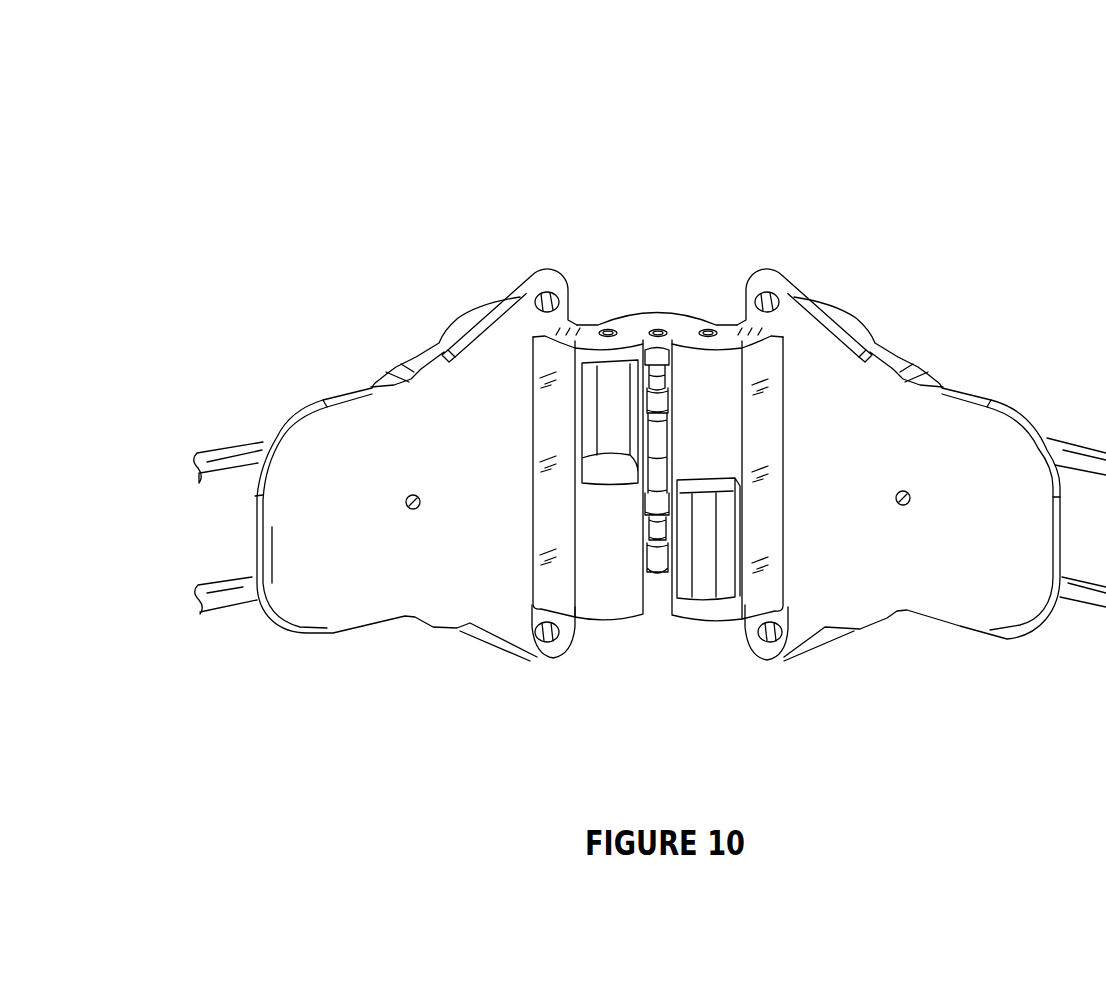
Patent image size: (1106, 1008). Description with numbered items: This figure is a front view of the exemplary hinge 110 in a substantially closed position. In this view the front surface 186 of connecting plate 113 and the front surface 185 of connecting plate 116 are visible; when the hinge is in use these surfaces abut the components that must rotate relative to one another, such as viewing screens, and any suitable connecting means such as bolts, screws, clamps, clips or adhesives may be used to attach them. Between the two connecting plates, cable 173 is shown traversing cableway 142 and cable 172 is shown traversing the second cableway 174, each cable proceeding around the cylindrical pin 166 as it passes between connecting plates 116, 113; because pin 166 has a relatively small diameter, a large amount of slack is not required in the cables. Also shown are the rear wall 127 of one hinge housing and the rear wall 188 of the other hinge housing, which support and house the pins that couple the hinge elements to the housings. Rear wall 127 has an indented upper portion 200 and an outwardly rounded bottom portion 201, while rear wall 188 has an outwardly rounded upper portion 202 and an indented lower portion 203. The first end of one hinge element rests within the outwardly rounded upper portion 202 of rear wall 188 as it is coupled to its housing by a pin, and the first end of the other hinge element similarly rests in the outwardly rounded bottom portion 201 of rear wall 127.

The hinge 110 is at (842, 188).
The connecting plate 113 is at (357, 388).
The connecting plate 116 is at (968, 388).
The rear wall 127 is at (582, 309).
The cableway 142 is at (678, 406).
The cylindrical pin 166 is at (645, 504).
The cable 172 is at (645, 527).
The cable 173 is at (645, 347).
The second cableway 174 is at (658, 562).
The front surface 185 is at (957, 583).
The front surface 186 is at (362, 592).
The rear wall 188 is at (727, 311).
The indented upper portion 200 is at (598, 402).
The outwardly rounded bottom portion 201 is at (605, 597).
The outwardly rounded upper portion 202 is at (783, 334).
The indented lower portion 203 is at (705, 583).